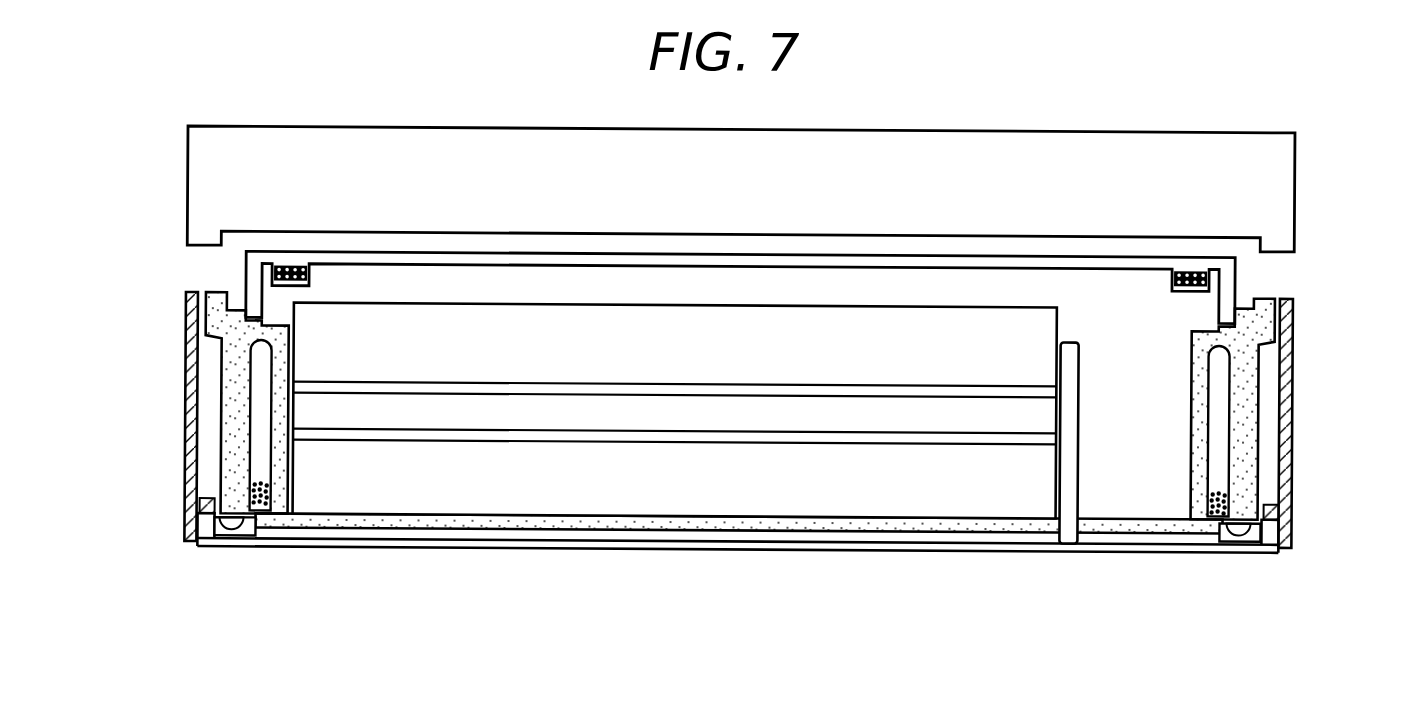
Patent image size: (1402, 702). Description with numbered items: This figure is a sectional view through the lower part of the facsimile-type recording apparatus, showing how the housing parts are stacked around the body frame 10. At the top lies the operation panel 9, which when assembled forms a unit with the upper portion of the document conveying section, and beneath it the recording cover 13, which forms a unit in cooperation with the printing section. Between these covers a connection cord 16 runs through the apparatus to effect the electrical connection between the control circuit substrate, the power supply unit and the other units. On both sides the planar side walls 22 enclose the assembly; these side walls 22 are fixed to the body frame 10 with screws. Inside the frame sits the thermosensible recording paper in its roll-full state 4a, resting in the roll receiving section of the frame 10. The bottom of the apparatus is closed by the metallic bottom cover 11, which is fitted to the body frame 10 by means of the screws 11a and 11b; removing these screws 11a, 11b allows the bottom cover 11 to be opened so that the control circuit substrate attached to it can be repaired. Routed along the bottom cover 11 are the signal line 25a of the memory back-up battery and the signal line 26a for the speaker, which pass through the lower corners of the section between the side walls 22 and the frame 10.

The operation panel 9 is at (237, 125).
The recording cover 13 is at (663, 250).
The connection cord 16 is at (292, 264).
The side wall 22 is at (193, 418).
The bottom cover 11 is at (620, 540).
The body frame 10 is at (711, 514).
The signal line 26a is at (256, 495).
The signal line 25a is at (1230, 491).
The screw 11a is at (236, 521).
The screw 11b is at (1244, 529).
The roll-full state 4a is at (915, 496).